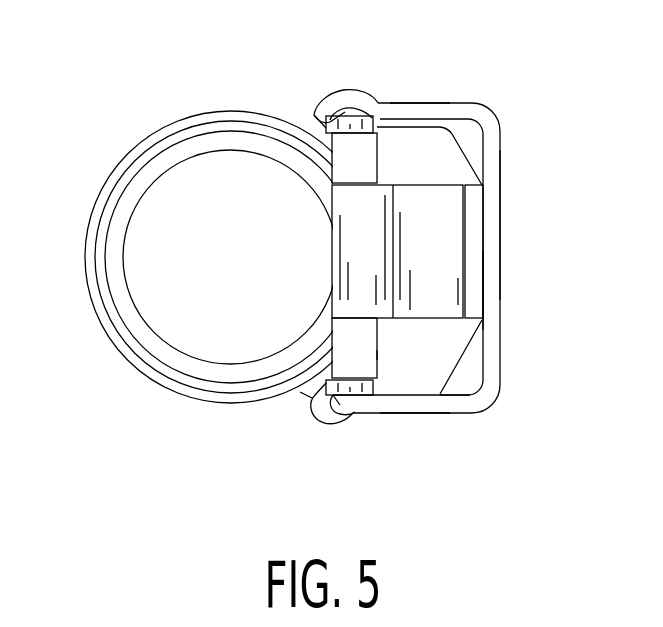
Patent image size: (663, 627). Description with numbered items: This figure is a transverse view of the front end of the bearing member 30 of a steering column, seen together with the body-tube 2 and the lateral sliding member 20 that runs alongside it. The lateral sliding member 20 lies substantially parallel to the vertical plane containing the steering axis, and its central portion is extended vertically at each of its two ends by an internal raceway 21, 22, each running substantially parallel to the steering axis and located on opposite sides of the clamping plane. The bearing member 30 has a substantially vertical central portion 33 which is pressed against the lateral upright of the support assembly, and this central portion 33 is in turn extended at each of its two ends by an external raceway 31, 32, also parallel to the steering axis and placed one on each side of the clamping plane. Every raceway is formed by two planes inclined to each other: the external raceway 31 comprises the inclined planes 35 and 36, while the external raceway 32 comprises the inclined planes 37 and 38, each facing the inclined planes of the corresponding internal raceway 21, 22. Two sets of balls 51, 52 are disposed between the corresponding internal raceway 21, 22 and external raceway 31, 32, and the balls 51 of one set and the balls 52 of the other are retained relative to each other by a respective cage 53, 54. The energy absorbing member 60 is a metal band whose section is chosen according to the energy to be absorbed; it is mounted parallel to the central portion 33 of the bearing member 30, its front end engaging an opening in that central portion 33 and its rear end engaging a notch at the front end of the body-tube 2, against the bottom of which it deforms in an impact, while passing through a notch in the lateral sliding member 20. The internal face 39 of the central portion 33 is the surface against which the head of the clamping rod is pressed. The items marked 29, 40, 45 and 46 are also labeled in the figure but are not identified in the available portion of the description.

The body-tube 2 is at (106, 195).
The lateral sliding member 20 is at (297, 394).
The internal raceway 21 is at (334, 178).
The internal raceway 22 is at (345, 322).
The recess 29 is at (378, 352).
The bearing member 30 is at (518, 130).
The external raceway 31 is at (358, 100).
The external raceway 32 is at (346, 426).
The central portion 33 is at (490, 296).
The inclined plane 35 is at (328, 102).
The inclined plane 36 is at (372, 100).
The inclined plane 37 is at (316, 410).
The inclined plane 38 is at (364, 418).
The internal face 39 is at (478, 362).
The outer wall 40 is at (503, 213).
The upper support element 45 is at (438, 104).
The lower support element 46 is at (455, 403).
The balls 51 is at (345, 102).
The balls 52 is at (330, 422).
The cage 53 is at (352, 150).
The cage 54 is at (352, 356).
The energy absorbing member 60 is at (446, 237).